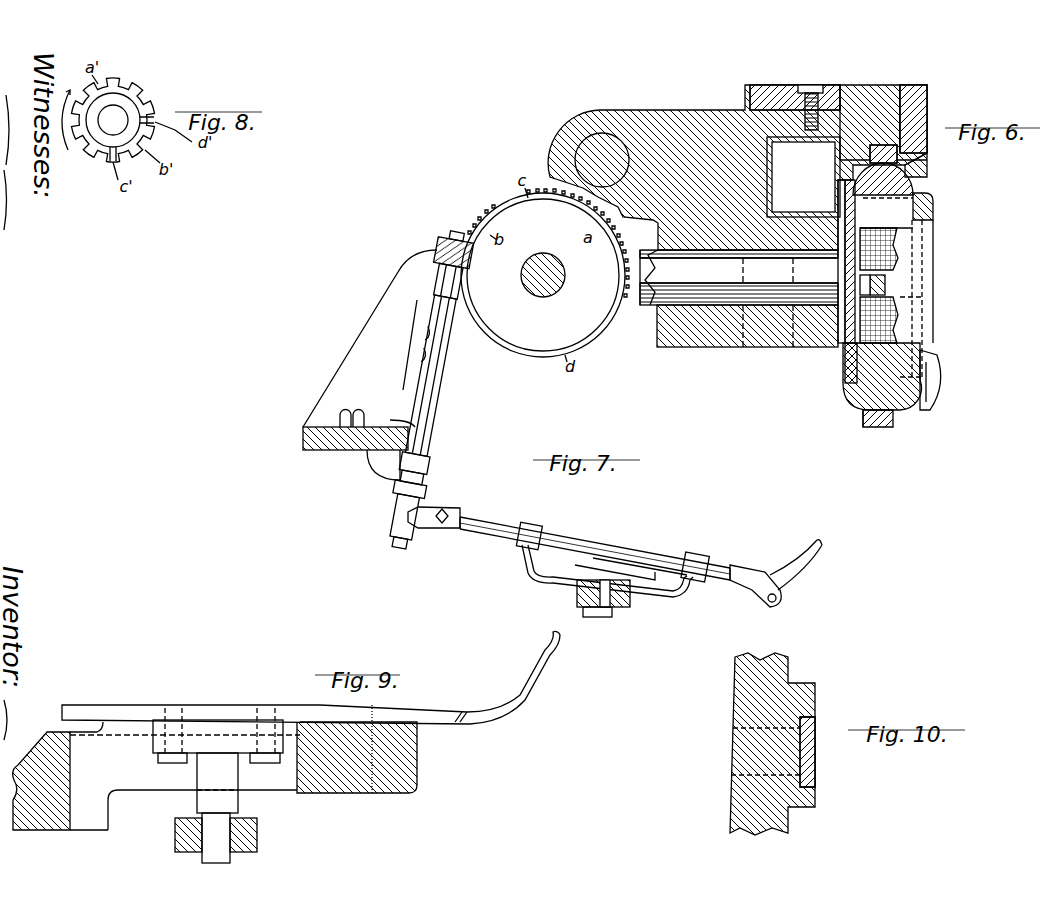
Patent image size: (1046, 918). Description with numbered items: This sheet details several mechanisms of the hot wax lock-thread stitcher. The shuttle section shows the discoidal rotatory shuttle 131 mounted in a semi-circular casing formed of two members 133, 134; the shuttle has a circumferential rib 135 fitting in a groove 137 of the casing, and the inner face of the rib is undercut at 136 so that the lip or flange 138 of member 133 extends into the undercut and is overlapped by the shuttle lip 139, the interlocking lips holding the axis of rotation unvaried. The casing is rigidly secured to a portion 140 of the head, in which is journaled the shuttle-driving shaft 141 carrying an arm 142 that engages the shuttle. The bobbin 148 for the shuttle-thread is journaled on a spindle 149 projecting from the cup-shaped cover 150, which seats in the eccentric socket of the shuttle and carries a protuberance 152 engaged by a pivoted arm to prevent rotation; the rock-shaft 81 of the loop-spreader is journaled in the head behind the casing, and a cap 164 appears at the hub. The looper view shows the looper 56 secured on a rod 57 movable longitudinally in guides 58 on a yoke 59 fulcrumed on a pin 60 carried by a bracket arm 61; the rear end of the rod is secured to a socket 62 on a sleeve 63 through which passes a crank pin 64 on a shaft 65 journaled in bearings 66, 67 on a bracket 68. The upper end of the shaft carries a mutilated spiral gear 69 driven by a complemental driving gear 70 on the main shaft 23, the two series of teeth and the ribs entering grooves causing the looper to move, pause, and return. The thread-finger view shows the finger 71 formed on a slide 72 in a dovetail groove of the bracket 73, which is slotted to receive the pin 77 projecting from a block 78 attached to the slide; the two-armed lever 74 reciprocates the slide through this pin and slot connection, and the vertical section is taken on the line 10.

In FIG. 6, the rock-shaft 81 is at (606, 148).
In FIG. 6, the casing member 133 is at (886, 92).
In FIG. 6, the casing member 134 is at (927, 90).
In FIG. 6, the groove 137 is at (885, 145).
In FIG. 6, the lip or flange 138 is at (862, 165).
In FIG. 6, the shuttle 131 is at (928, 172).
In FIG. 6, the cap 164 is at (915, 190).
In FIG. 6, the arm 142 is at (920, 212).
In FIG. 6, the bobbin 148 is at (845, 367).
In FIG. 6, the spindle 149 is at (885, 283).
In FIG. 6, the cover 150 is at (912, 290).
In FIG. 6, the protuberance 152 is at (937, 394).
In FIG. 6, the undercut groove 136 is at (866, 405).
In FIG. 6, the circumferential rib 135 is at (890, 425).
In FIG. 6, the lip 139 is at (865, 427).
In FIG. 6, the portion of the head 140 is at (720, 347).
In FIG. 6, the shuttle-driving shaft 141 is at (660, 290).
In FIG. 7, the driving gear 70 is at (512, 210).
In FIG. 7, the combined cam and crank shaft 23 is at (548, 285).
In FIG. 7, the mutilated spiral gear 69 is at (435, 242).
In FIG. 8, the mutilated spiral gear 69 is at (108, 131).
In FIG. 7, the bearing 67 is at (462, 280).
In FIG. 7, the shaft 65 is at (432, 390).
In FIG. 7, the bearing 66 is at (425, 466).
In FIG. 7, the sleeve 63 is at (388, 522).
In FIG. 7, the crank pin 64 is at (396, 553).
In FIG. 7, the bracket 68 is at (370, 365).
In FIG. 7, the socket 62 is at (455, 510).
In FIG. 7, the rod 57 is at (660, 555).
In FIG. 7, the guides 58 is at (532, 523).
In FIG. 7, the yoke 59 is at (577, 570).
In FIG. 7, the pin 60 is at (628, 596).
In FIG. 7, the bracket arm 61 is at (600, 617).
In FIG. 7, the looper 56 is at (808, 560).
In FIG. 9, the bracket 73 is at (325, 785).
In FIG. 10, the bracket 73 is at (732, 785).
In FIG. 9, the slide 72 is at (310, 712).
In FIG. 10, the slide 72 is at (815, 762).
In FIG. 9, the thread-finger 71 is at (555, 660).
In FIG. 9, the section line 10 is at (373, 755).
In FIG. 9, the block 78 is at (153, 740).
In FIG. 9, the pin 77 is at (217, 808).
In FIG. 9, the two-armed lever 74 is at (175, 838).